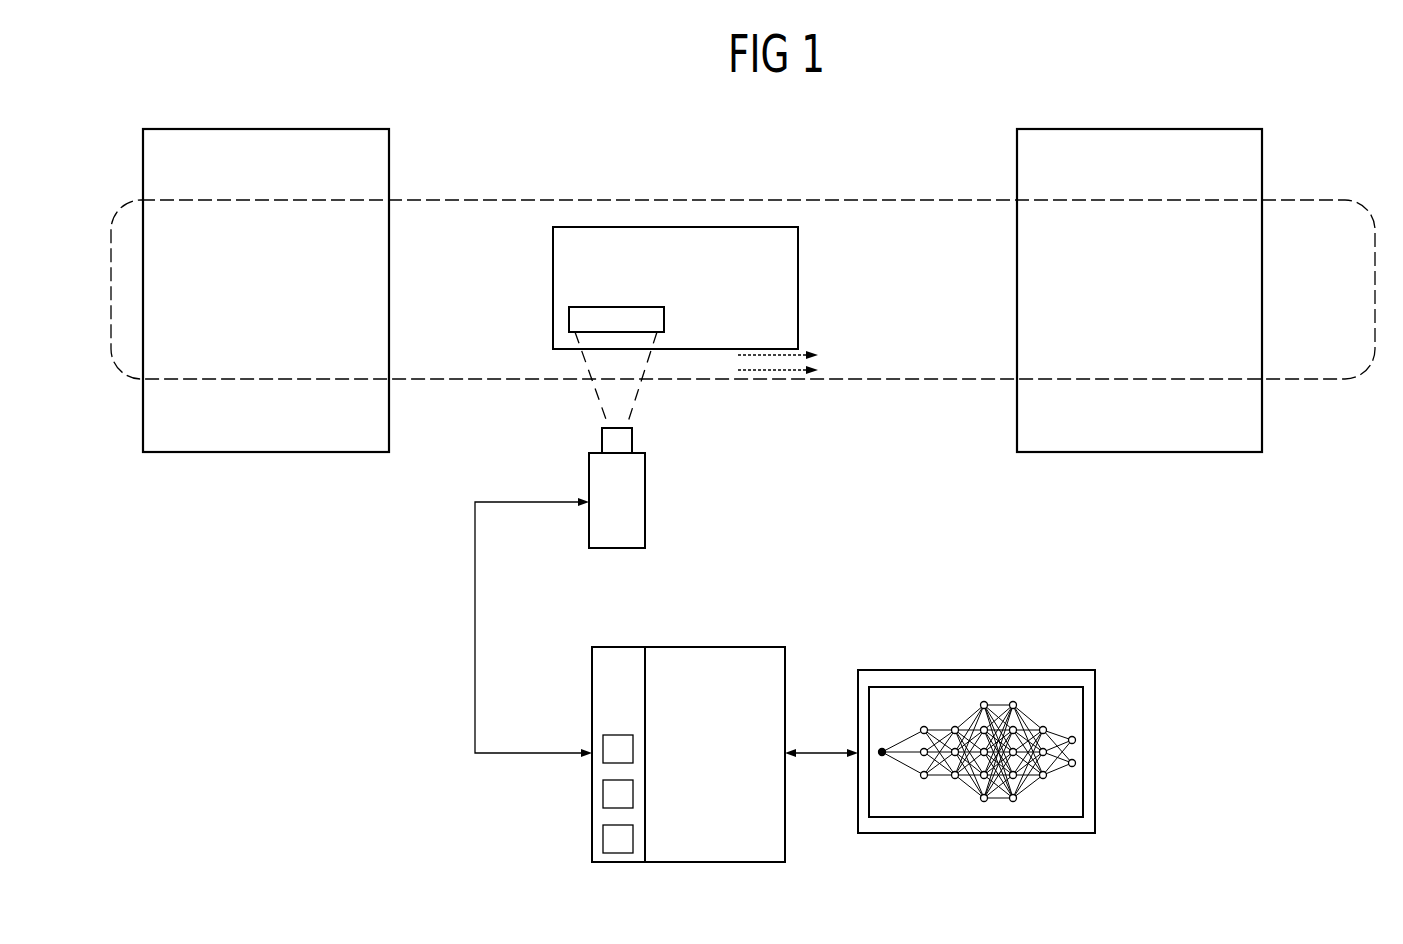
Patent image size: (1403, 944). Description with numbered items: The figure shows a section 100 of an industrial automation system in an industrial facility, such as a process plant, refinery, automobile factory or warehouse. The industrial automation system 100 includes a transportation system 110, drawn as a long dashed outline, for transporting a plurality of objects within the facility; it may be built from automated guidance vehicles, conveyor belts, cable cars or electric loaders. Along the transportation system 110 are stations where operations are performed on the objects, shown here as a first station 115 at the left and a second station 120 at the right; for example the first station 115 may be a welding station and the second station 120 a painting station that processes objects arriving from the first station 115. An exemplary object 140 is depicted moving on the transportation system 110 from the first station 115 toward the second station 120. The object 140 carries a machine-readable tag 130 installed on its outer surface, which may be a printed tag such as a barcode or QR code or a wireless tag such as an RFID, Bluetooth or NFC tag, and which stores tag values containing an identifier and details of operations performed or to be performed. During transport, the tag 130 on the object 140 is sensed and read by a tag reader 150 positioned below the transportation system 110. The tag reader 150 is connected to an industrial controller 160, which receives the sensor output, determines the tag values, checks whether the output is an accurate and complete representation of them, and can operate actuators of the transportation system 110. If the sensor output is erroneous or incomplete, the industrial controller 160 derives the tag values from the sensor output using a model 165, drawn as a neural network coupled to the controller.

The section of an industrial automation system 100 is at (1326, 155).
The transportation system 110 is at (960, 200).
The first station 115 is at (389, 410).
The second station 120 is at (1262, 410).
The machine-readable tag 130 is at (664, 322).
The object 140 is at (798, 256).
The tag reader 150 is at (645, 489).
The industrial controller 160 is at (745, 647).
The model 165 is at (1095, 748).